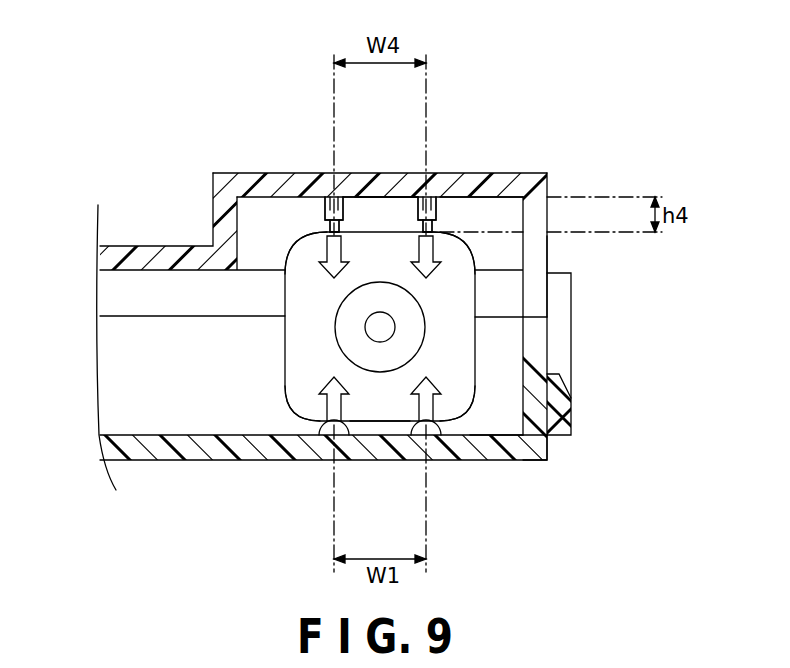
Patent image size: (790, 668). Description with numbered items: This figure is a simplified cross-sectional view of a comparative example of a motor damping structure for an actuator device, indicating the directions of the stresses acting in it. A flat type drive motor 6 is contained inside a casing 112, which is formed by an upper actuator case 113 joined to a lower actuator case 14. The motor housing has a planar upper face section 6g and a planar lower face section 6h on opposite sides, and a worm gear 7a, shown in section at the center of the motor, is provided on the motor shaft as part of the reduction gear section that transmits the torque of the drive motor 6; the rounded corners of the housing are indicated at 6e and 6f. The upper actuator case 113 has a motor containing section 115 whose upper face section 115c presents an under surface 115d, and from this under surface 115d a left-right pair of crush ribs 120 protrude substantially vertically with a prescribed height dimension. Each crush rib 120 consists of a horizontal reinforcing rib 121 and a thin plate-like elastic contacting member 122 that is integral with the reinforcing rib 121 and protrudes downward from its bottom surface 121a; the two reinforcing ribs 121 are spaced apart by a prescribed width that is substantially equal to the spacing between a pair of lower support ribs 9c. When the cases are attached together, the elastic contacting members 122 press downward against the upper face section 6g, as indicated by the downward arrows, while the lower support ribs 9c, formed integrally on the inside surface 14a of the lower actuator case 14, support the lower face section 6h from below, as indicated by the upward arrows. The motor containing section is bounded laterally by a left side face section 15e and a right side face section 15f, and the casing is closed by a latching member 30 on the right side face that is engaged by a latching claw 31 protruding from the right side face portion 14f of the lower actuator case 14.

The drive motor 6 is at (473, 252).
The upper corner of block 6e is at (285, 253).
The lower corner of block 6f is at (292, 407).
The upper face section 6g is at (368, 214).
The lower face section 6h is at (376, 422).
The worm gear 7a is at (338, 306).
The lower support rib 9c is at (318, 441).
The lower actuator case 14 is at (537, 461).
The inside surface 14a is at (497, 438).
The right side face portion 14f is at (549, 452).
The left side face section 15e is at (213, 217).
The right side face section 15f is at (548, 280).
The latching member 30 is at (574, 417).
The latching claw 31 is at (560, 382).
The casing 112 is at (555, 188).
The upper actuator case 113 is at (548, 235).
The motor containing section 115 is at (413, 230).
The upper face section 115c is at (497, 198).
The under surface 115d is at (390, 197).
The crush rib 120 is at (240, 93).
The horizontal reinforcing rib 121 is at (327, 200).
The bottom surface 121a is at (330, 236).
The elastic contacting member 122 is at (328, 227).